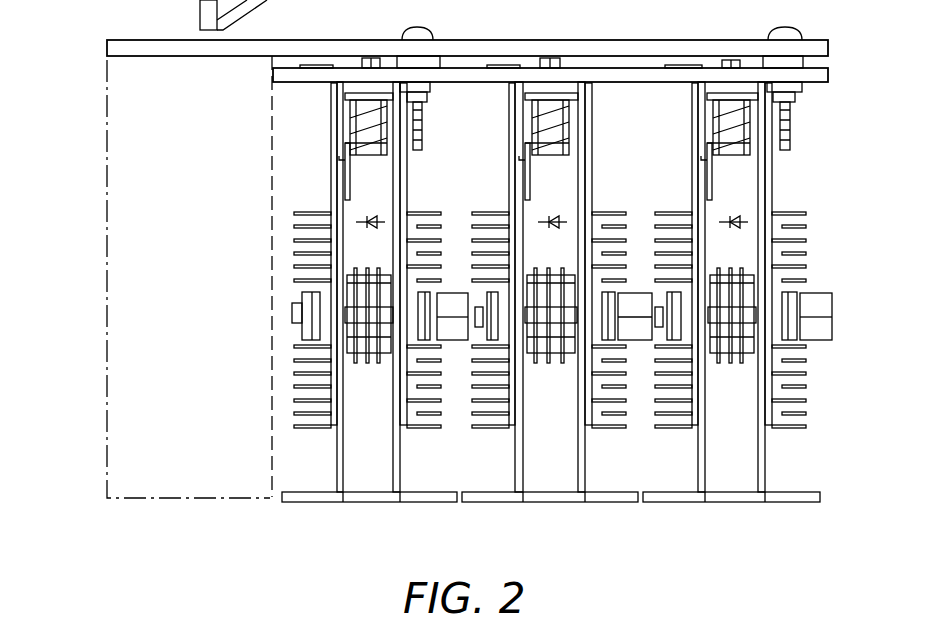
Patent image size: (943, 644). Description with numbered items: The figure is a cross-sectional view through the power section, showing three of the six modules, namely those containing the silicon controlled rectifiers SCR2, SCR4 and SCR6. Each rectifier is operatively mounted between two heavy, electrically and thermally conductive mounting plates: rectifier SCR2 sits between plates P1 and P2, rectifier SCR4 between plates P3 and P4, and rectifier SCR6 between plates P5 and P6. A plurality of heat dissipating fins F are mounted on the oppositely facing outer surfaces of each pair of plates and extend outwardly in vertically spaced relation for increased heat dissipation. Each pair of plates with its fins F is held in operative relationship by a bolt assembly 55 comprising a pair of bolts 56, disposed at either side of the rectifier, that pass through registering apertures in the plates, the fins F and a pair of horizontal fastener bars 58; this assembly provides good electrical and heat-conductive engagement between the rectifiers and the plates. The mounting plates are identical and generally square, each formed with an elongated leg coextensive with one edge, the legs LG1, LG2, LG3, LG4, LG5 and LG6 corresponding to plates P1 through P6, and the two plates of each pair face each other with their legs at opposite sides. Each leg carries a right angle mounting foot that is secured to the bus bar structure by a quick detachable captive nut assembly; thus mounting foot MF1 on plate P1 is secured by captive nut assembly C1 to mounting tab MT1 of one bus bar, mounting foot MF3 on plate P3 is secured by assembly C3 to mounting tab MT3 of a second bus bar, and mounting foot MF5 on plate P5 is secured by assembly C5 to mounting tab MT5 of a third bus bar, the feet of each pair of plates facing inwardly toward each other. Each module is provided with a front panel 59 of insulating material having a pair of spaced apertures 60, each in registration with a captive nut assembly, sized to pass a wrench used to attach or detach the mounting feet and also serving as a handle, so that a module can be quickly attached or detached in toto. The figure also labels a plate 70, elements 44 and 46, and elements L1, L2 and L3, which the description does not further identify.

The dashed outline of adjacent unit 44 is at (125, 236).
The upper support structure 46 is at (143, 47).
The bolt assembly 55 is at (460, 232).
The bolts 56 is at (374, 322).
The horizontal fastener bars 58 is at (308, 325).
The front panel 59 is at (320, 503).
The spaced apertures 60 is at (377, 503).
The plate 70 is at (828, 74).
The heat dissipating fins F is at (298, 199).
The mounting plate P1 is at (337, 450).
The mounting plate P2 is at (393, 455).
The mounting plate P3 is at (515, 450).
The mounting plate P4 is at (578, 455).
The mounting plate P5 is at (698, 455).
The mounting plate P6 is at (758, 455).
The mounting foot MF1 is at (355, 92).
The mounting foot MF3 is at (537, 92).
The mounting foot MF5 is at (717, 92).
The mounting tab MT1 is at (371, 83).
The mounting tab MT3 is at (560, 82).
The mounting tab MT5 is at (738, 82).
The inductor coil 1 L1 is at (345, 112).
The inductor coil 2 L2 is at (525, 114).
The inductor coil 3 L3 is at (707, 114).
The leg LG1 is at (338, 188).
The leg LG2 is at (401, 174).
The leg LG3 is at (522, 203).
The leg LG4 is at (587, 126).
The leg LG5 is at (705, 203).
The leg LG6 is at (766, 169).
The captive nut assembly C1 is at (383, 163).
The captive nut assembly C3 is at (563, 163).
The captive nut assembly C5 is at (747, 163).
The silicon controlled rectifier SCR2 is at (366, 237).
The silicon controlled rectifier SCR4 is at (547, 238).
The silicon controlled rectifier SCR6 is at (729, 238).